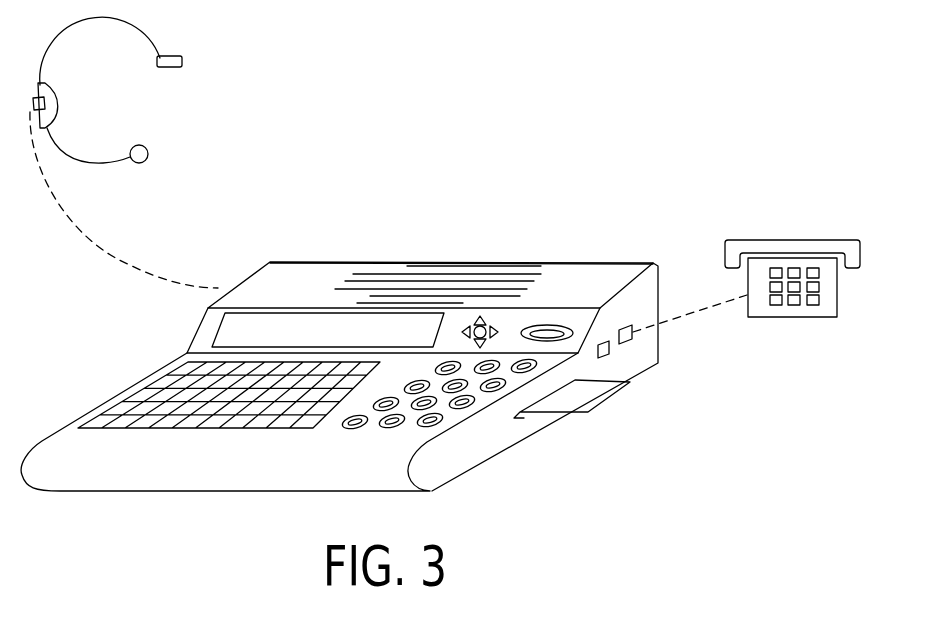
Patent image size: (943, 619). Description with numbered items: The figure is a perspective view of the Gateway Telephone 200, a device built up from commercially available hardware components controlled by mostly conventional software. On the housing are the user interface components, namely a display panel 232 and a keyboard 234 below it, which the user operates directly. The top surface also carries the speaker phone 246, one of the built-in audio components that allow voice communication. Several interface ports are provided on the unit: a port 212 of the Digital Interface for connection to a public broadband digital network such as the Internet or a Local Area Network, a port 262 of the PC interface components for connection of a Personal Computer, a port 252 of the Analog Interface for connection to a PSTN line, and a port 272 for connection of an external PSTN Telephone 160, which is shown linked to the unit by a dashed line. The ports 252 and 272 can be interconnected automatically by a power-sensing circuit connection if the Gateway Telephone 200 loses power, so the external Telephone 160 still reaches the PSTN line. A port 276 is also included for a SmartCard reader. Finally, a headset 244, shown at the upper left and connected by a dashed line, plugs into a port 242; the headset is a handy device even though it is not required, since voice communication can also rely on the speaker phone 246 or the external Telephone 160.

The external PSTN Telephone 160 is at (805, 327).
The Gateway Telephone 200 is at (470, 199).
The port 212 is at (400, 256).
The display panel 232 is at (233, 335).
The keyboard 234 is at (115, 400).
The port 242 is at (225, 282).
The headset 244 is at (150, 115).
The speaker phone 246 is at (515, 270).
The port 252 is at (610, 355).
The port 262 is at (478, 258).
The port 272 is at (632, 340).
The port 276 is at (575, 425).